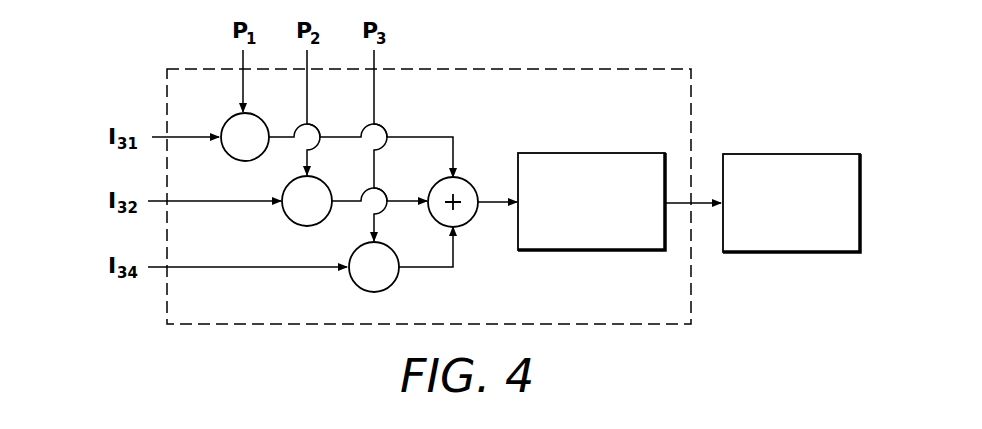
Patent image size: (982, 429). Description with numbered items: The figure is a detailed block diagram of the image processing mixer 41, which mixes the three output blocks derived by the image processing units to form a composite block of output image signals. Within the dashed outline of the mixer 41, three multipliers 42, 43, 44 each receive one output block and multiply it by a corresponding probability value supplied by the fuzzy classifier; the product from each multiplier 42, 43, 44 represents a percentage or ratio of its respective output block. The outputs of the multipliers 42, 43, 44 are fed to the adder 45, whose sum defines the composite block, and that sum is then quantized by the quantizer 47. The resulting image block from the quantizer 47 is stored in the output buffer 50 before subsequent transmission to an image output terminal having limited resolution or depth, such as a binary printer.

The image processing mixer 41 is at (694, 302).
The multiplier 42 is at (237, 157).
The multiplier 43 is at (288, 216).
The multiplier 44 is at (358, 281).
The adder 45 is at (462, 186).
The quantizer 47 is at (608, 162).
The output buffer 50 is at (817, 233).